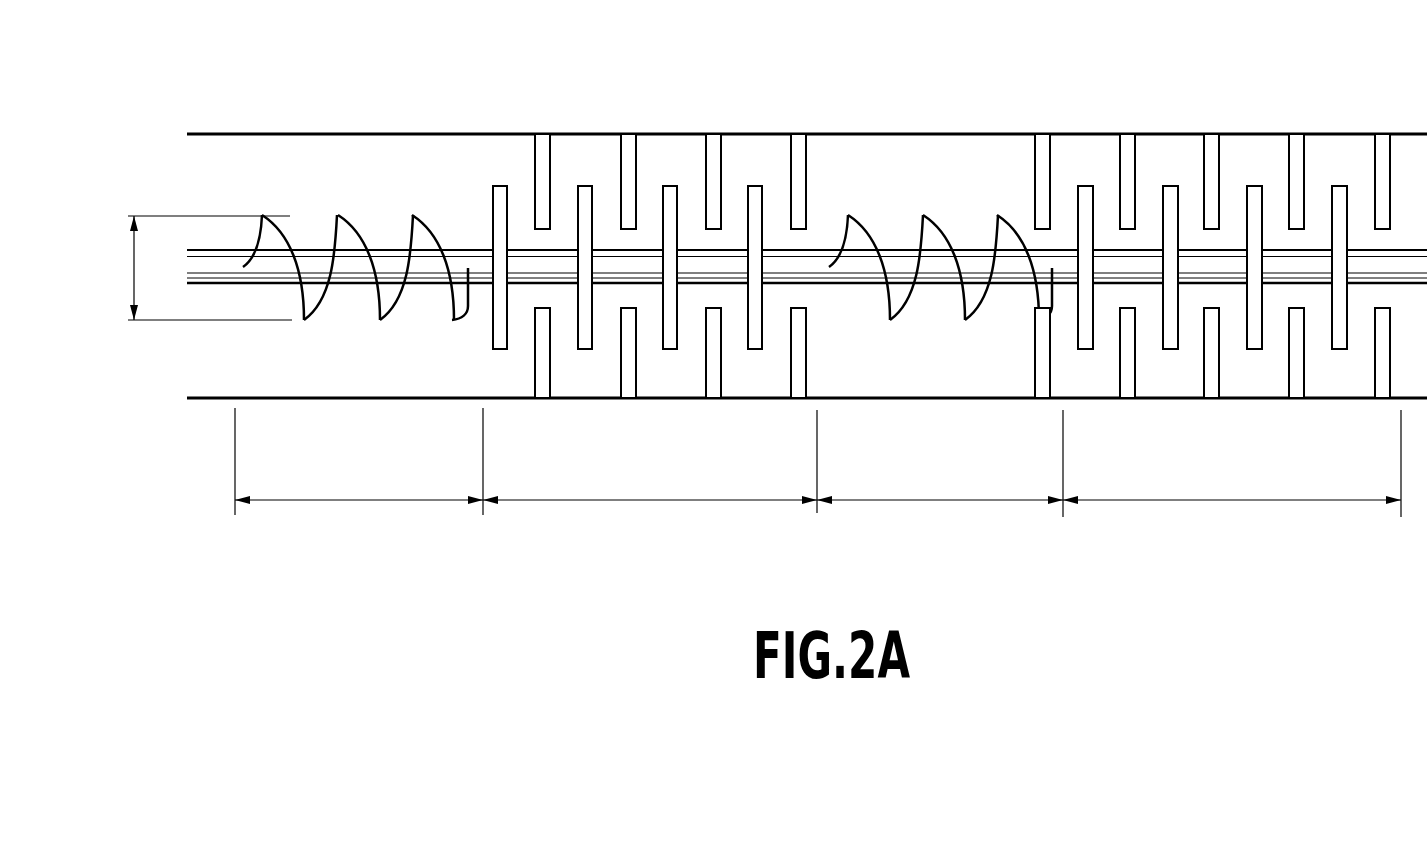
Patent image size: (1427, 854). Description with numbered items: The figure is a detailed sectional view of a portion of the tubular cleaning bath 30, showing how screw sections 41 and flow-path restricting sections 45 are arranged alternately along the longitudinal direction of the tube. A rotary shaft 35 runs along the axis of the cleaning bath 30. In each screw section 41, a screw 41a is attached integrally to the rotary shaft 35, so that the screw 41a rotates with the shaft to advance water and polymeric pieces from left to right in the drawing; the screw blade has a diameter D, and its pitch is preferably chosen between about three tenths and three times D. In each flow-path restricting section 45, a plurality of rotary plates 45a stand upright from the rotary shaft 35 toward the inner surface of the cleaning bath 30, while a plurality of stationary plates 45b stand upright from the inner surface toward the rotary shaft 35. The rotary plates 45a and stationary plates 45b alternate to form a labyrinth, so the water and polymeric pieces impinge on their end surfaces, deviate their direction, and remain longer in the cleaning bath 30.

The cleaning bath 30 is at (273, 134).
The rotary shaft 35 is at (222, 260).
The screw section 41 is at (649, 462).
The screw 41a is at (282, 232).
The flow-path restricting section 45 is at (942, 463).
The rotary plate 45a is at (498, 186).
The stationary plate 45b is at (620, 167).
The diameter of the screw blade D is at (202, 268).